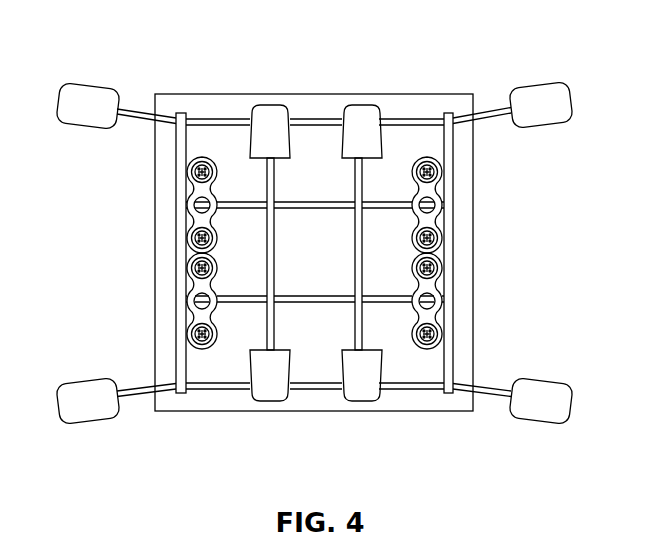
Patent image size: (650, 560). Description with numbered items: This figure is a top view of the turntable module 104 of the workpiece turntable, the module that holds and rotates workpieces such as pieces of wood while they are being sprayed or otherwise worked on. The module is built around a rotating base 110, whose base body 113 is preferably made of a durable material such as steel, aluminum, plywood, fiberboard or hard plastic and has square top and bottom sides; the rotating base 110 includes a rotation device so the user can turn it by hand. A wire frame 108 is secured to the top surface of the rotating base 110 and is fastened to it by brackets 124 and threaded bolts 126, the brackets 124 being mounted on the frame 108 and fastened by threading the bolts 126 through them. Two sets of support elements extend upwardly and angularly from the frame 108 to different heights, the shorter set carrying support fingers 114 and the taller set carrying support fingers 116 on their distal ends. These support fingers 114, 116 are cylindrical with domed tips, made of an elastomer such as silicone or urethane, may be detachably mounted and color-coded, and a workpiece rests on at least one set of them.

The turntable module 104 is at (319, 264).
The wire frame 108 is at (227, 390).
The rotating base 110 is at (437, 412).
The base body 113 is at (400, 102).
The support finger 114 is at (272, 402).
The support finger 116 is at (548, 127).
The bracket 124 is at (187, 195).
The threaded bolt 126 is at (190, 173).